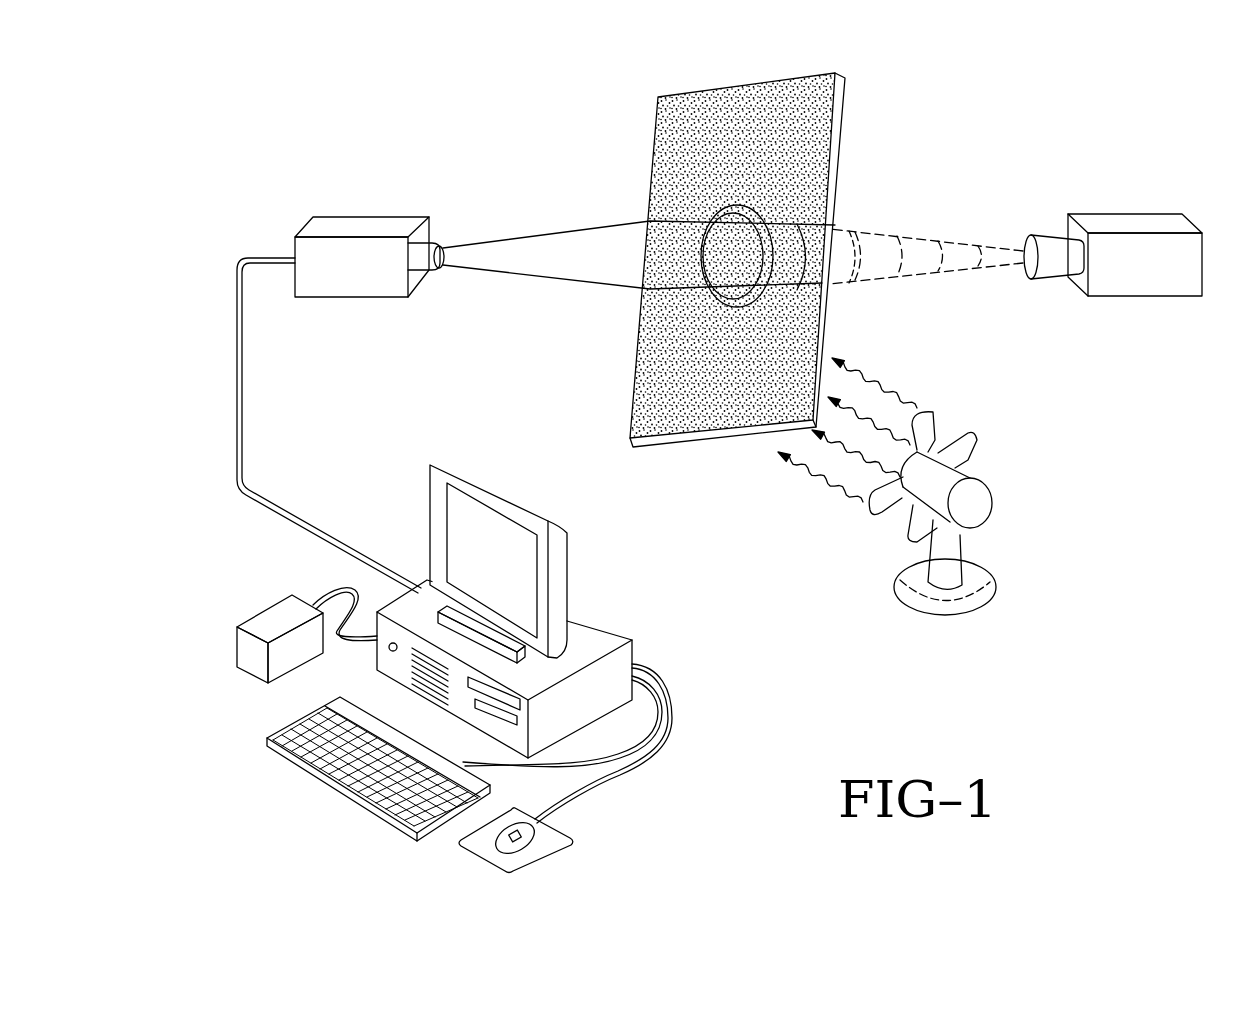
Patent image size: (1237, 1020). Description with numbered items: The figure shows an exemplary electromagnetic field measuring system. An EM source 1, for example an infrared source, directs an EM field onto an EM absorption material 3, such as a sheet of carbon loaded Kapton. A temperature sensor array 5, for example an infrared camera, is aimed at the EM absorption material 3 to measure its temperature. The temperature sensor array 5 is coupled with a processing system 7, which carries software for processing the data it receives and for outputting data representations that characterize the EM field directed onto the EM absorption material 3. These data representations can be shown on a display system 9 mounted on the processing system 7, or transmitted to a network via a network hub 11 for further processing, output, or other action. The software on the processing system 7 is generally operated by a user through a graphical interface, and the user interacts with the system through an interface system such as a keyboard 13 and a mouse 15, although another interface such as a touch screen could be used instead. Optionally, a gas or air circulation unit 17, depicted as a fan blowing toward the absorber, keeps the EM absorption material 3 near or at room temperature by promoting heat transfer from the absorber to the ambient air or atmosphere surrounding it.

The EM source 1 is at (1177, 229).
The EM absorption material 3 is at (712, 108).
The temperature sensor array 5 is at (365, 226).
The processing system 7 is at (596, 622).
The display system 9 is at (475, 465).
The network hub 11 is at (263, 612).
The keyboard 13 is at (307, 777).
The mouse 15 is at (527, 847).
The gas or air circulation unit 17 is at (978, 496).